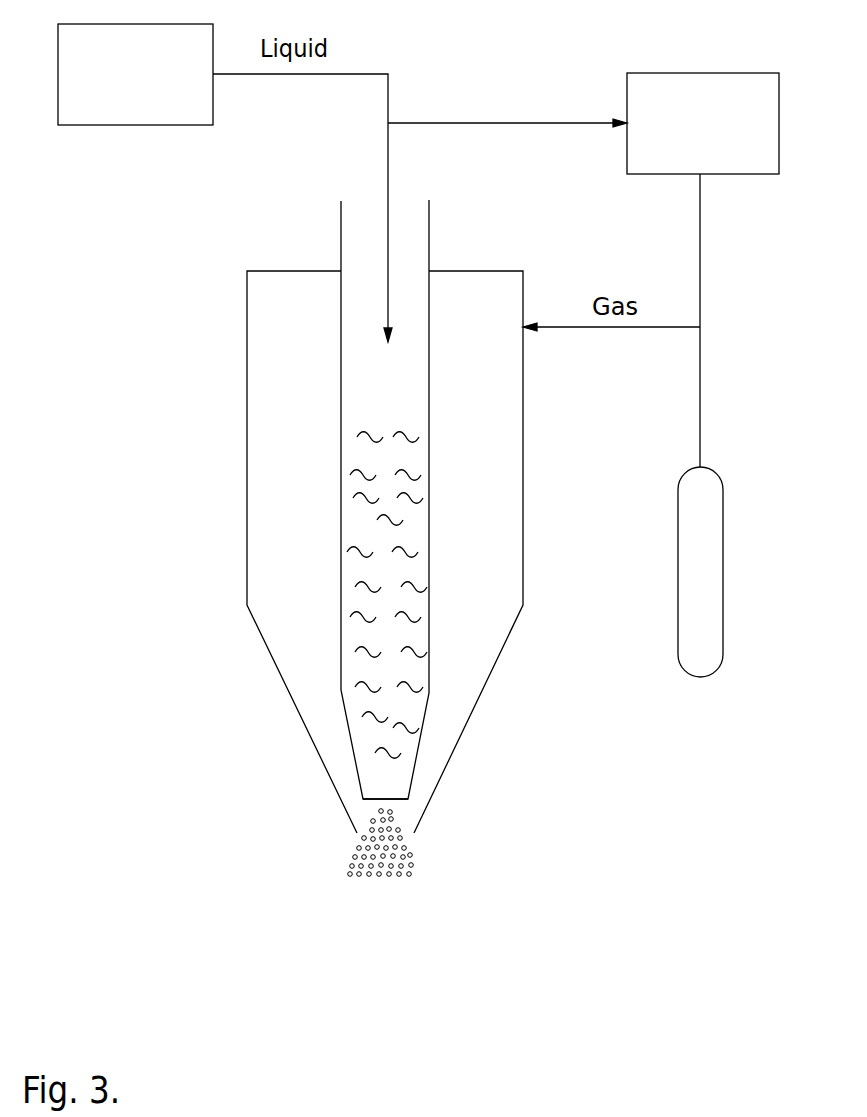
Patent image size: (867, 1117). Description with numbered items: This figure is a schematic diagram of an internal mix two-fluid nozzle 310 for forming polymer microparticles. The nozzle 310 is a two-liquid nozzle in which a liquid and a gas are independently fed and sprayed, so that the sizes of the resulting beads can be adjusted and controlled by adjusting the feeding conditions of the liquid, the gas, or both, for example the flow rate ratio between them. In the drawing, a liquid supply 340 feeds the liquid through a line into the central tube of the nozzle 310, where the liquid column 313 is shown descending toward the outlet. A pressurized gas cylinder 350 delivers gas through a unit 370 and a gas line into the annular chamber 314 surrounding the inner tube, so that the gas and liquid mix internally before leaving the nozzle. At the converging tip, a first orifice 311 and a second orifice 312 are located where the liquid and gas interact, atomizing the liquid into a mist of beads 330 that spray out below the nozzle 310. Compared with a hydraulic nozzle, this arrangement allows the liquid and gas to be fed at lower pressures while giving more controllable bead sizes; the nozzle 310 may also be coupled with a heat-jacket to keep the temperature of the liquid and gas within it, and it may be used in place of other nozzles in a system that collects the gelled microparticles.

The nozzle 310 is at (247, 364).
The inner liquid tube 311 is at (392, 803).
The nozzle outlet 312 is at (356, 803).
The liquid in tube 313 is at (417, 536).
The gas chamber 314 is at (482, 395).
The atomized spray droplets 330 is at (370, 878).
The liquid supply 340 is at (135, 125).
The gas cylinder 350 is at (723, 528).
The pump / controller unit 370 is at (698, 73).